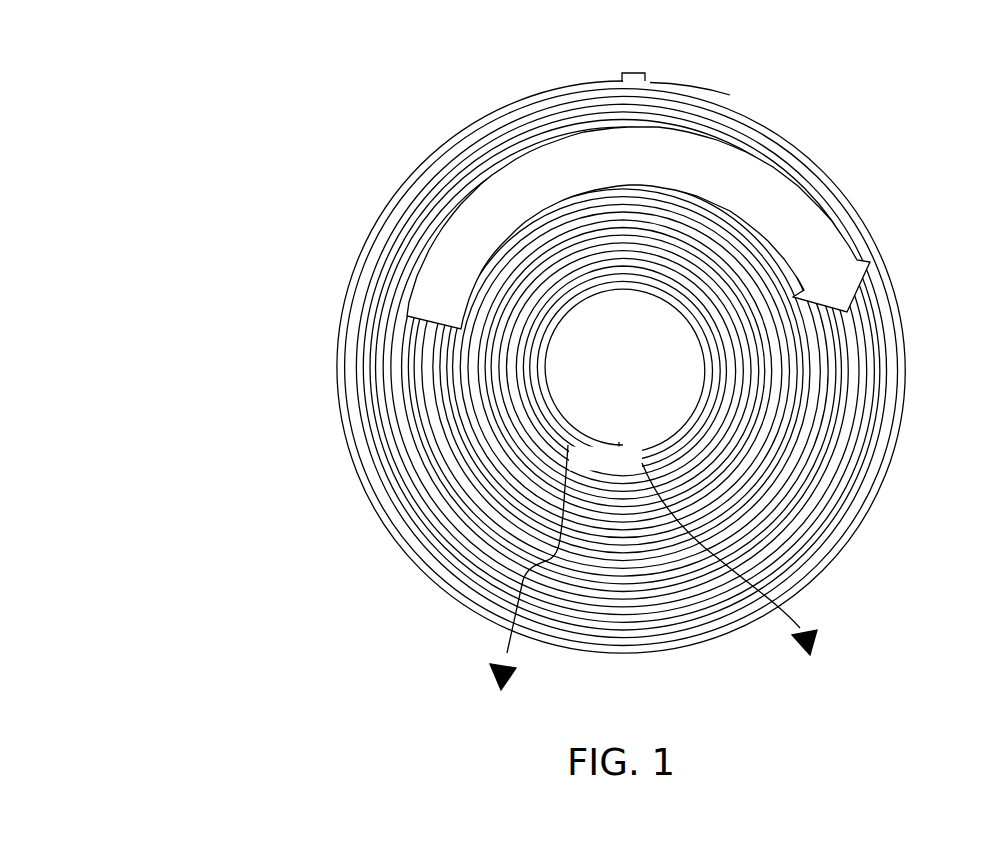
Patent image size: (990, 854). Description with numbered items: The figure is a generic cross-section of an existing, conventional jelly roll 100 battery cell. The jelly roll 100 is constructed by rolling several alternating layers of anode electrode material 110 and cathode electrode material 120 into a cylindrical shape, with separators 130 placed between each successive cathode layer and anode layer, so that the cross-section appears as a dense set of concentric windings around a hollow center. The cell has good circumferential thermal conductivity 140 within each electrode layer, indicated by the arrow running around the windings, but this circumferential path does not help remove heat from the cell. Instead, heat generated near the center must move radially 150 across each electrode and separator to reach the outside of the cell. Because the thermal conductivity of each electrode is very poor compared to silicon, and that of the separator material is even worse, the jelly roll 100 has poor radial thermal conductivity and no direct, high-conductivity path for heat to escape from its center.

The jelly roll 100 is at (310, 210).
The anode electrode material 110 is at (640, 82).
The cathode electrode material 120 is at (667, 78).
The separators 130 is at (707, 90).
The circumferential thermal conductivity 140 is at (747, 173).
The radial heat movement 150 is at (466, 678).